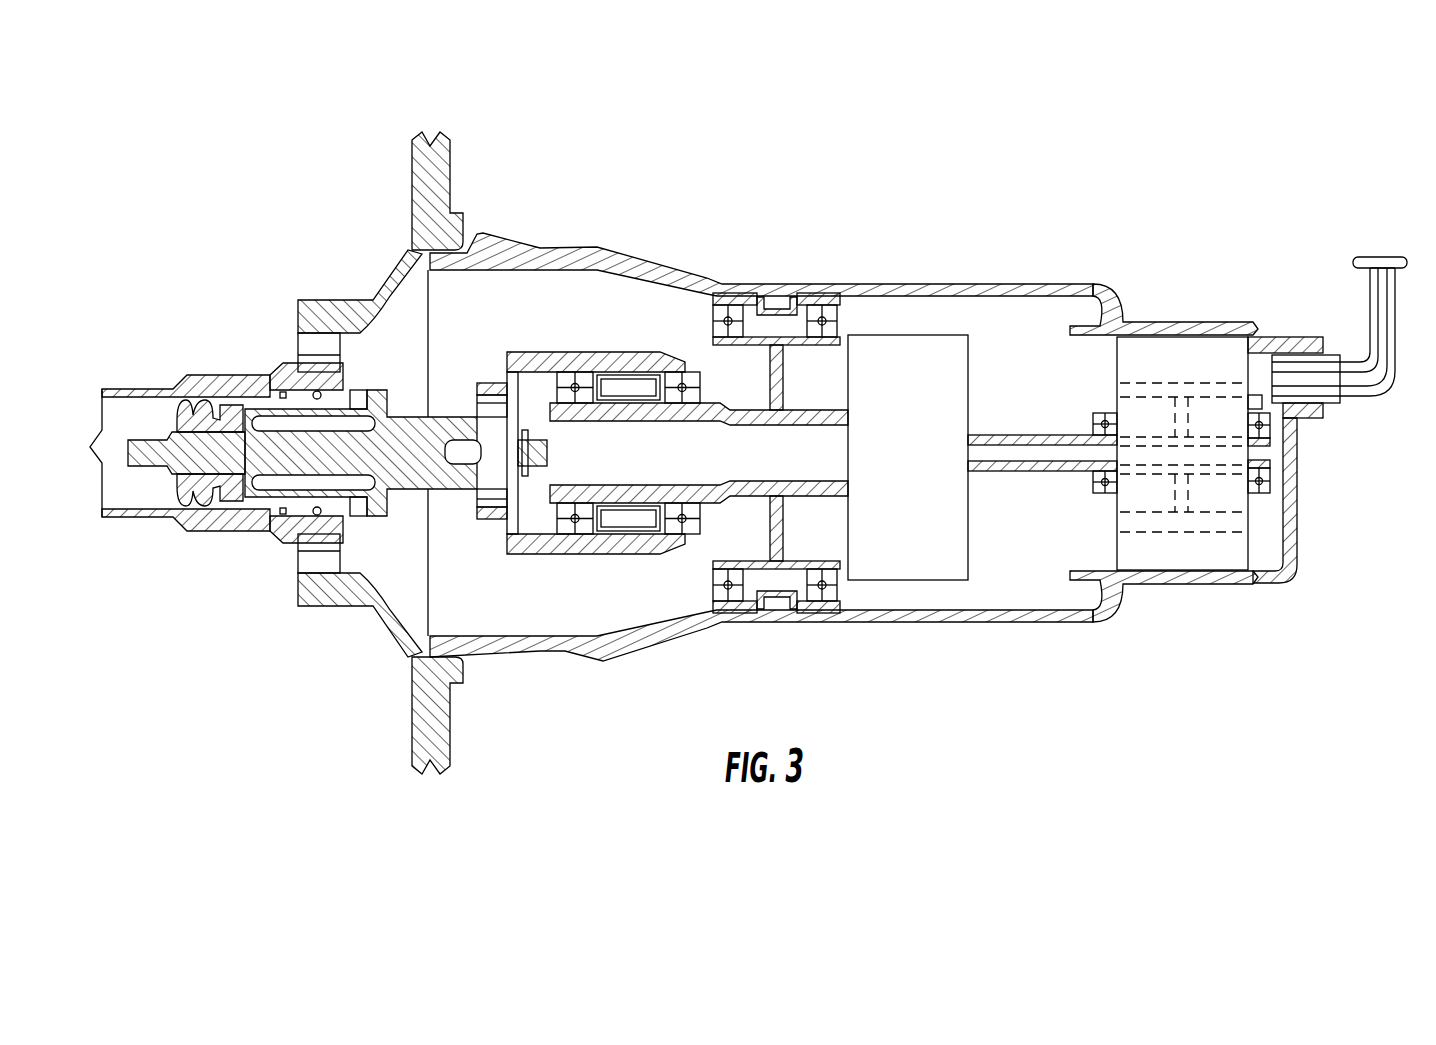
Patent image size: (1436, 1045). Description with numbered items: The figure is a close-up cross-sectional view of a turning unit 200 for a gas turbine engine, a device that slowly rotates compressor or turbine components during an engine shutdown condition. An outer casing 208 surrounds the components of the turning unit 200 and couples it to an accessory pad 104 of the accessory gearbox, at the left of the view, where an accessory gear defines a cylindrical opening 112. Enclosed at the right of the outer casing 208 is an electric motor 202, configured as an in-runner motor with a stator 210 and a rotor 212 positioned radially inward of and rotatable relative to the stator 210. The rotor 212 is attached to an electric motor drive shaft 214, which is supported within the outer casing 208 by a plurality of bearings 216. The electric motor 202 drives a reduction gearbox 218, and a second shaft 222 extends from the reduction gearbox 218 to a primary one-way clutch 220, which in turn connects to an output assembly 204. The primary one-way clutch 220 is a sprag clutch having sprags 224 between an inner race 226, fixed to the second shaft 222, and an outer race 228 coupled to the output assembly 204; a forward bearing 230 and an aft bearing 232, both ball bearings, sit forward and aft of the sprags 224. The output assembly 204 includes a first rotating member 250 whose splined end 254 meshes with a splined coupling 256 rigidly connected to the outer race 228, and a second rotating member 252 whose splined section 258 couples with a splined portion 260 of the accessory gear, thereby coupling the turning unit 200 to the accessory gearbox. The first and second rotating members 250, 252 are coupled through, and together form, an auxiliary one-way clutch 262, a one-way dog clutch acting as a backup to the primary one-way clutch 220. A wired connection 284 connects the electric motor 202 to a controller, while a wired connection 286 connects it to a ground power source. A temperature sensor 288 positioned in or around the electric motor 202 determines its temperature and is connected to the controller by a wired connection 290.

The accessory pad 104 is at (456, 435).
The cylindrical opening 112 is at (93, 431).
The turning unit 200 is at (933, 412).
The electric motor 202 is at (1171, 445).
The output assembly 204 is at (355, 311).
The outer casing 208 is at (761, 443).
The stator 210 is at (1182, 416).
The rotor 212 is at (1290, 460).
The electric motor drive shaft 214 is at (1042, 475).
The bearings 216 is at (1183, 437).
The reduction gearbox 218 is at (925, 413).
The primary one-way clutch 220 is at (726, 408).
The second shaft 222 is at (699, 532).
The sprags 224 is at (626, 561).
The inner race 226 is at (699, 401).
The outer race 228 is at (588, 426).
The forward bearing 230 is at (575, 352).
The aft bearing 232 is at (712, 378).
The first rotating member 250 is at (396, 422).
The second rotating member 252 is at (214, 514).
The splined end 254 is at (448, 478).
The splined coupling 256 is at (487, 546).
The splined section 258 is at (294, 419).
The splined portion 260 is at (186, 432).
The auxiliary one-way clutch 262 is at (360, 582).
The wired connection 284 is at (1348, 250).
The wired connection 286 is at (1402, 258).
The temperature sensor 288 is at (1306, 404).
The wired connection 290 is at (1388, 337).